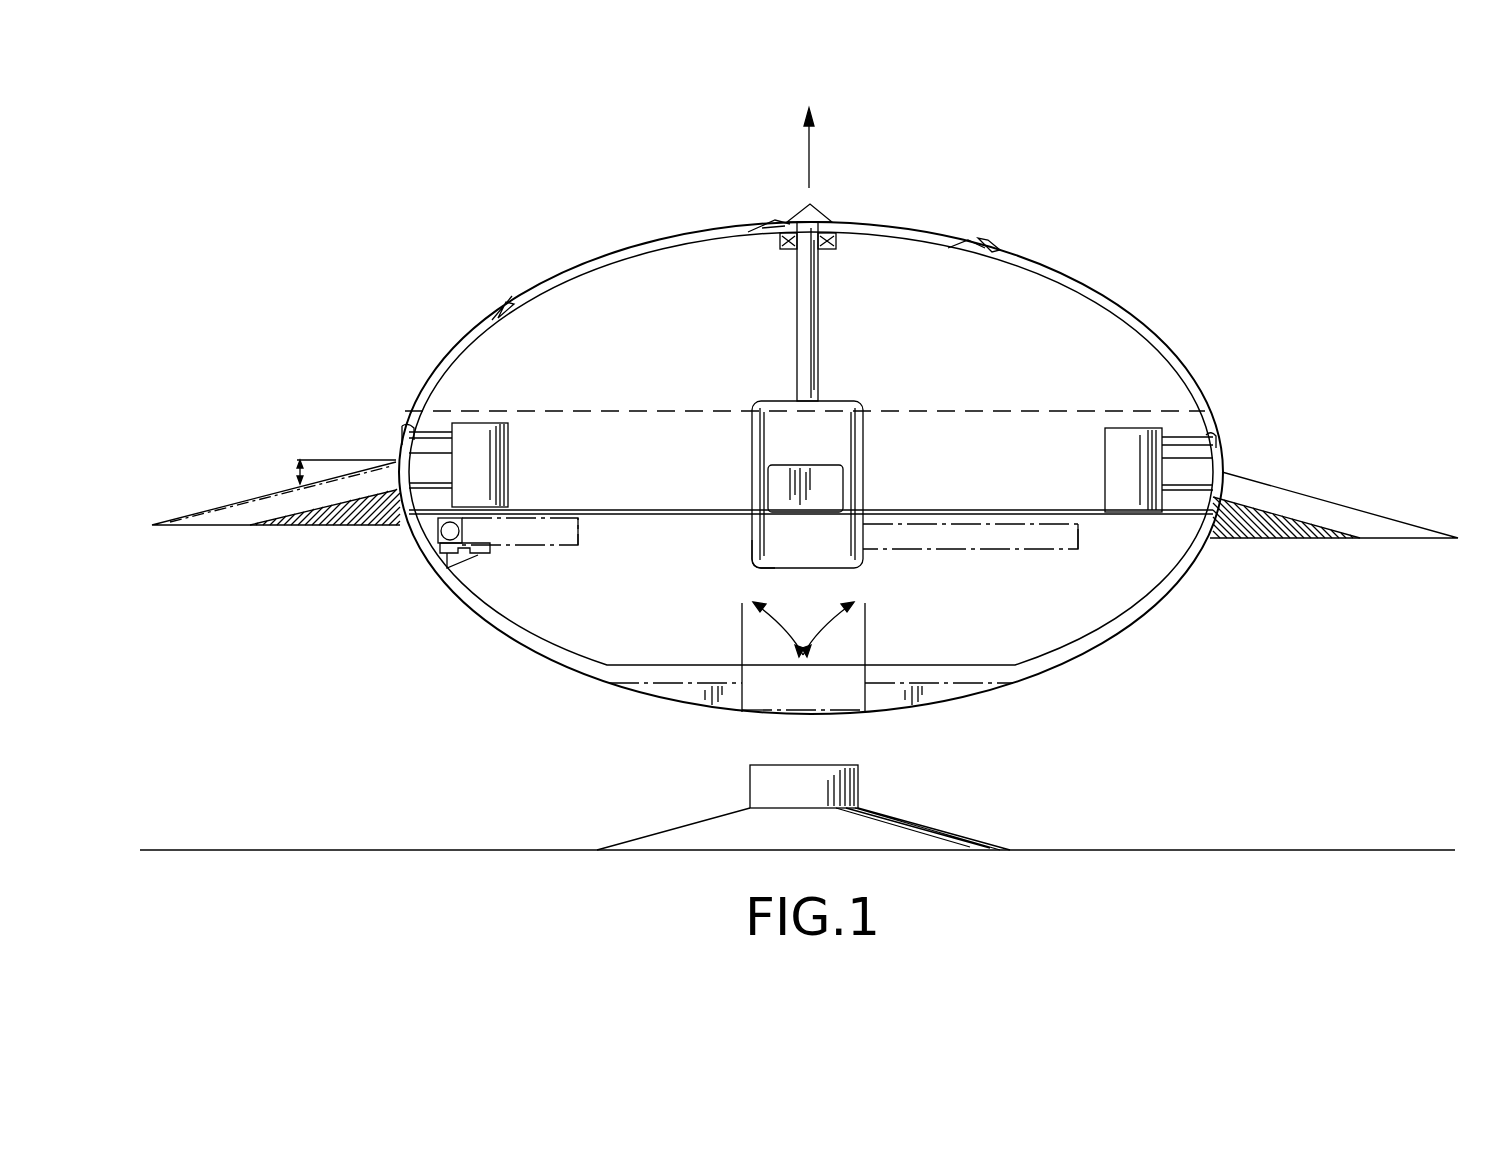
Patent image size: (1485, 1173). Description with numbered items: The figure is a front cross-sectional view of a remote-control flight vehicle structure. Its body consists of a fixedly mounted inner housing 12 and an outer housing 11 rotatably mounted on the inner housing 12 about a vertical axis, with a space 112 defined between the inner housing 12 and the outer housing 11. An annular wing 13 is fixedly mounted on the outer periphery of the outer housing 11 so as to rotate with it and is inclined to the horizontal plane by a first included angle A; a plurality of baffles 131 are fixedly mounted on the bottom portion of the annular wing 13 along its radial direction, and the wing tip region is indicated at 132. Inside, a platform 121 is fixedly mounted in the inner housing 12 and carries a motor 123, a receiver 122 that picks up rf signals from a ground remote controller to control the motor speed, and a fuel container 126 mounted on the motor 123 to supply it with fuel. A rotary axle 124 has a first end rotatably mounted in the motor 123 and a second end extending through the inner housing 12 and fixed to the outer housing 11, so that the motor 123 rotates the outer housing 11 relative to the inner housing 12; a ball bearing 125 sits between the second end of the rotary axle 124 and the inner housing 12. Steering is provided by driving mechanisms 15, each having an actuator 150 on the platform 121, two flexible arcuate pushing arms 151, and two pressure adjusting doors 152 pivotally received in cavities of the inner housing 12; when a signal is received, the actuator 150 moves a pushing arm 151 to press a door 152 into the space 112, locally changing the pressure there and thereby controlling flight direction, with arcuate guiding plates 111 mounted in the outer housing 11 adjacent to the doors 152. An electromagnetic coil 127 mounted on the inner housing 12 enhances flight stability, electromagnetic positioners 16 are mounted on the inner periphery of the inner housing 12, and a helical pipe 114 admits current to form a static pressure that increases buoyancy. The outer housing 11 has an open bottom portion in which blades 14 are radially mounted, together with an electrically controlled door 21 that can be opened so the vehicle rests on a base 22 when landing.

The outer housing 11 is at (937, 233).
The inner housing 12 is at (1022, 275).
The annular wing 13 is at (1298, 490).
The baffle 131 is at (1385, 540).
The left wing 132 is at (210, 527).
The blade 14 is at (935, 697).
The driving mechanism 15 is at (511, 400).
The actuator 150 is at (508, 453).
The flexible arcuate pushing arm 151 is at (440, 432).
The pressure adjusting door 152 is at (412, 430).
The electromagnetic positioner 16 is at (472, 575).
The electrically controlled door 21 is at (866, 635).
The base 22 is at (750, 787).
The arcuate guiding plate 111 is at (1209, 432).
The space 112 is at (1102, 298).
The helical pipe 114 is at (995, 250).
The platform 121 is at (1012, 511).
The receiver 122 is at (840, 482).
The motor 123 is at (838, 403).
The rotary axle 124 is at (797, 338).
The ball bearing 125 is at (838, 247).
The fuel container 126 is at (758, 558).
The electromagnetic coil 127 is at (650, 410).
The first included angle A is at (334, 471).